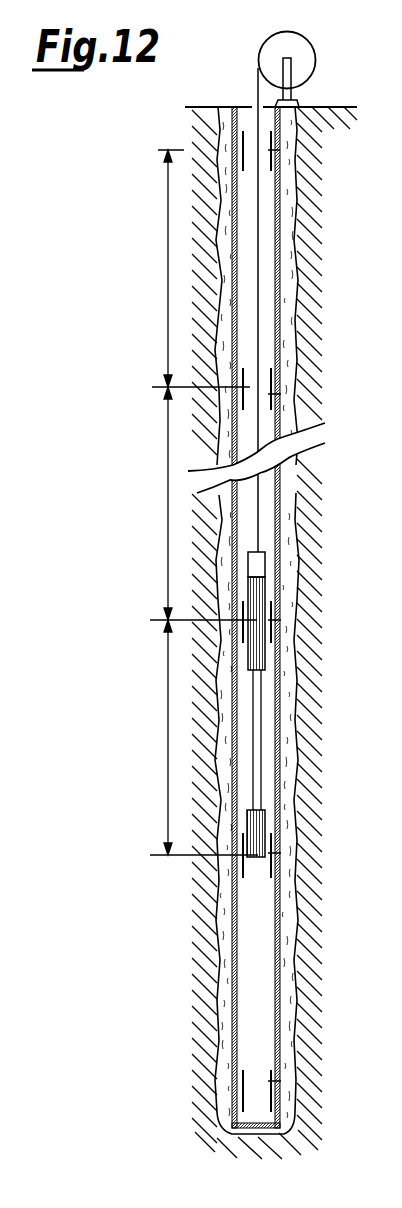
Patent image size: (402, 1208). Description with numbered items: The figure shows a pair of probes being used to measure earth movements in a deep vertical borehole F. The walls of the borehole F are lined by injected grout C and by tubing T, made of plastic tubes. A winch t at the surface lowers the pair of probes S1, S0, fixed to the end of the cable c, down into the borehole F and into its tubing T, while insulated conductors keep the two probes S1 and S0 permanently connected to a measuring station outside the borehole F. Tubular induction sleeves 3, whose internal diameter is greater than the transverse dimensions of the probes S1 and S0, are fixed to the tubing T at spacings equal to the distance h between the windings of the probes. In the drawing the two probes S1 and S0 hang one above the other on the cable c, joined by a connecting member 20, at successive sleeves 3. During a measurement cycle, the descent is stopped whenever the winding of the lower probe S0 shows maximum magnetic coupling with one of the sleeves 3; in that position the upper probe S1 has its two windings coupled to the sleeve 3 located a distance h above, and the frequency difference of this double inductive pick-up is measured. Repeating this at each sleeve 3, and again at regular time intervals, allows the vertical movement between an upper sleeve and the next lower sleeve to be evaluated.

The winch t is at (300, 52).
The deep vertical borehole F is at (220, 130).
The injected grout C is at (290, 125).
The tubing T is at (278, 213).
The cable c is at (258, 290).
The tubular induction sleeve 3 is at (272, 147).
The probe S1 is at (265, 582).
The probe S0 is at (266, 820).
The connecting rod 20 is at (257, 717).
The distance h is at (202, 502).